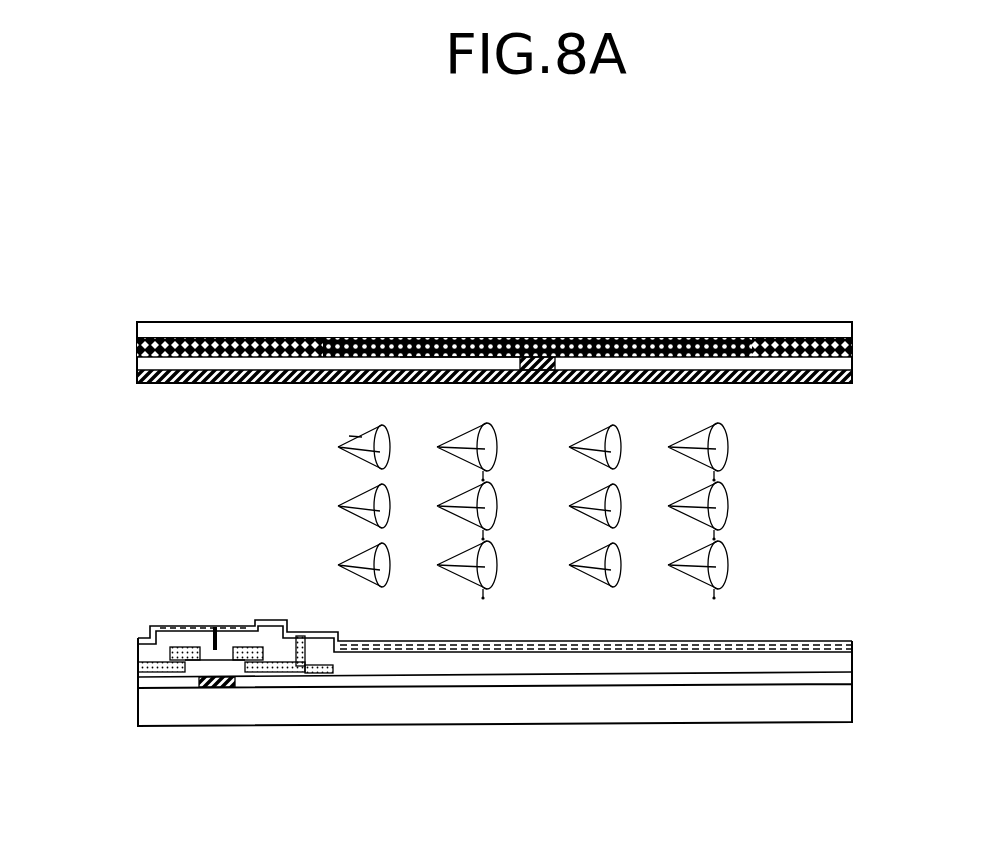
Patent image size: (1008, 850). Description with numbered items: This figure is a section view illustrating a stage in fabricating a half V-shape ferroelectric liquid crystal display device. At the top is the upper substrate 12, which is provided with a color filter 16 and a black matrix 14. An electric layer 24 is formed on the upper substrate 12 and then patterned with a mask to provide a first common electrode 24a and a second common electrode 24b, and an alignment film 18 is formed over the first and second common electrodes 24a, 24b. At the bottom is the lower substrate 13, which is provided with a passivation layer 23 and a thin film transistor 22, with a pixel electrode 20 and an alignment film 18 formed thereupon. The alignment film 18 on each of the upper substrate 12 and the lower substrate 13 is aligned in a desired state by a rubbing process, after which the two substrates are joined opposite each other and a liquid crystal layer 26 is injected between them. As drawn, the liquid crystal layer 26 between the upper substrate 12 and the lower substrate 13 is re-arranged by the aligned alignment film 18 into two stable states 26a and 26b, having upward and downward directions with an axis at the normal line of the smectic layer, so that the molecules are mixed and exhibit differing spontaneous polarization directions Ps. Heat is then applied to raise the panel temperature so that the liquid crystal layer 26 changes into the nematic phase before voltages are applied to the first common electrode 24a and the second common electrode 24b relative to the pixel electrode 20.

The upper substrate 12 is at (788, 326).
The lower substrate 13 is at (828, 713).
The black matrix 14 is at (853, 346).
The color filter 16 is at (698, 341).
The alignment film 18 is at (853, 378).
The pixel electrode 20 is at (853, 647).
The thin film transistor 22 is at (127, 662).
The passivation layer 23 is at (847, 659).
The electric layer 24 is at (575, 222).
The first common electrode 24a is at (496, 360).
The second common electrode 24b is at (563, 362).
The liquid crystal layer 26 is at (461, 511).
The first stable state 26a is at (338, 447).
The second stable state 26b is at (437, 447).
The spontaneous polarization direction Ps is at (348, 424).